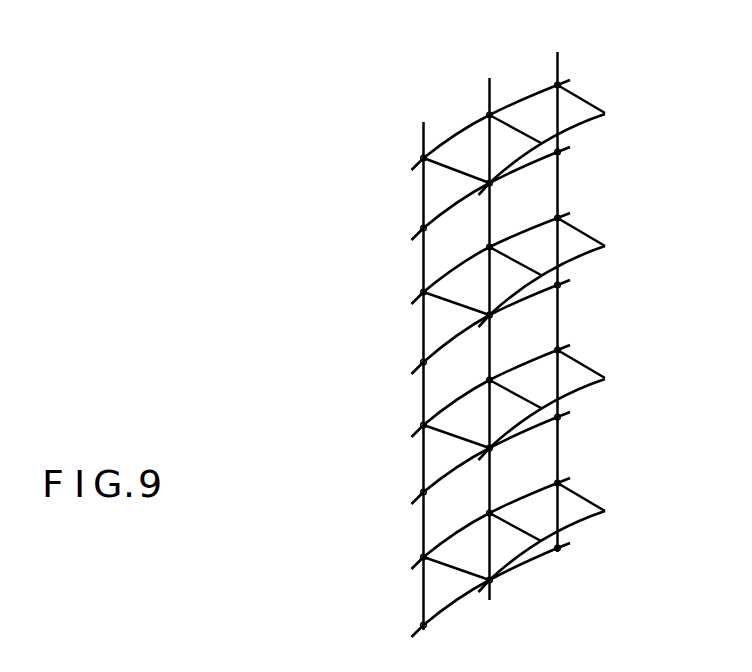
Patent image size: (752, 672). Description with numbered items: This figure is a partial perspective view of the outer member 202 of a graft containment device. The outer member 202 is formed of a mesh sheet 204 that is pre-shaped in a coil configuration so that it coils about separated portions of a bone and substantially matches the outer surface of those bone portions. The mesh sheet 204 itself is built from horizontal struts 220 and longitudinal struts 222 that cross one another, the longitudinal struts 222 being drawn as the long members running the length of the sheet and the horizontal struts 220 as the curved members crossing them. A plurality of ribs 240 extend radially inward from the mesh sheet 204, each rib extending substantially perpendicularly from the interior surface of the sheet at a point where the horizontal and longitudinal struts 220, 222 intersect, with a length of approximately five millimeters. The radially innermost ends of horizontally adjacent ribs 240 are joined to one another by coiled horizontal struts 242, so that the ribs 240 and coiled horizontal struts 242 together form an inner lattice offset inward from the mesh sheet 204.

The outer member 202 is at (370, 333).
The mesh sheet 204 is at (423, 204).
The horizontal struts 220 is at (448, 342).
The longitudinal struts 222 is at (489, 467).
The ribs 240 is at (452, 170).
The coiled horizontal struts 242 is at (573, 258).